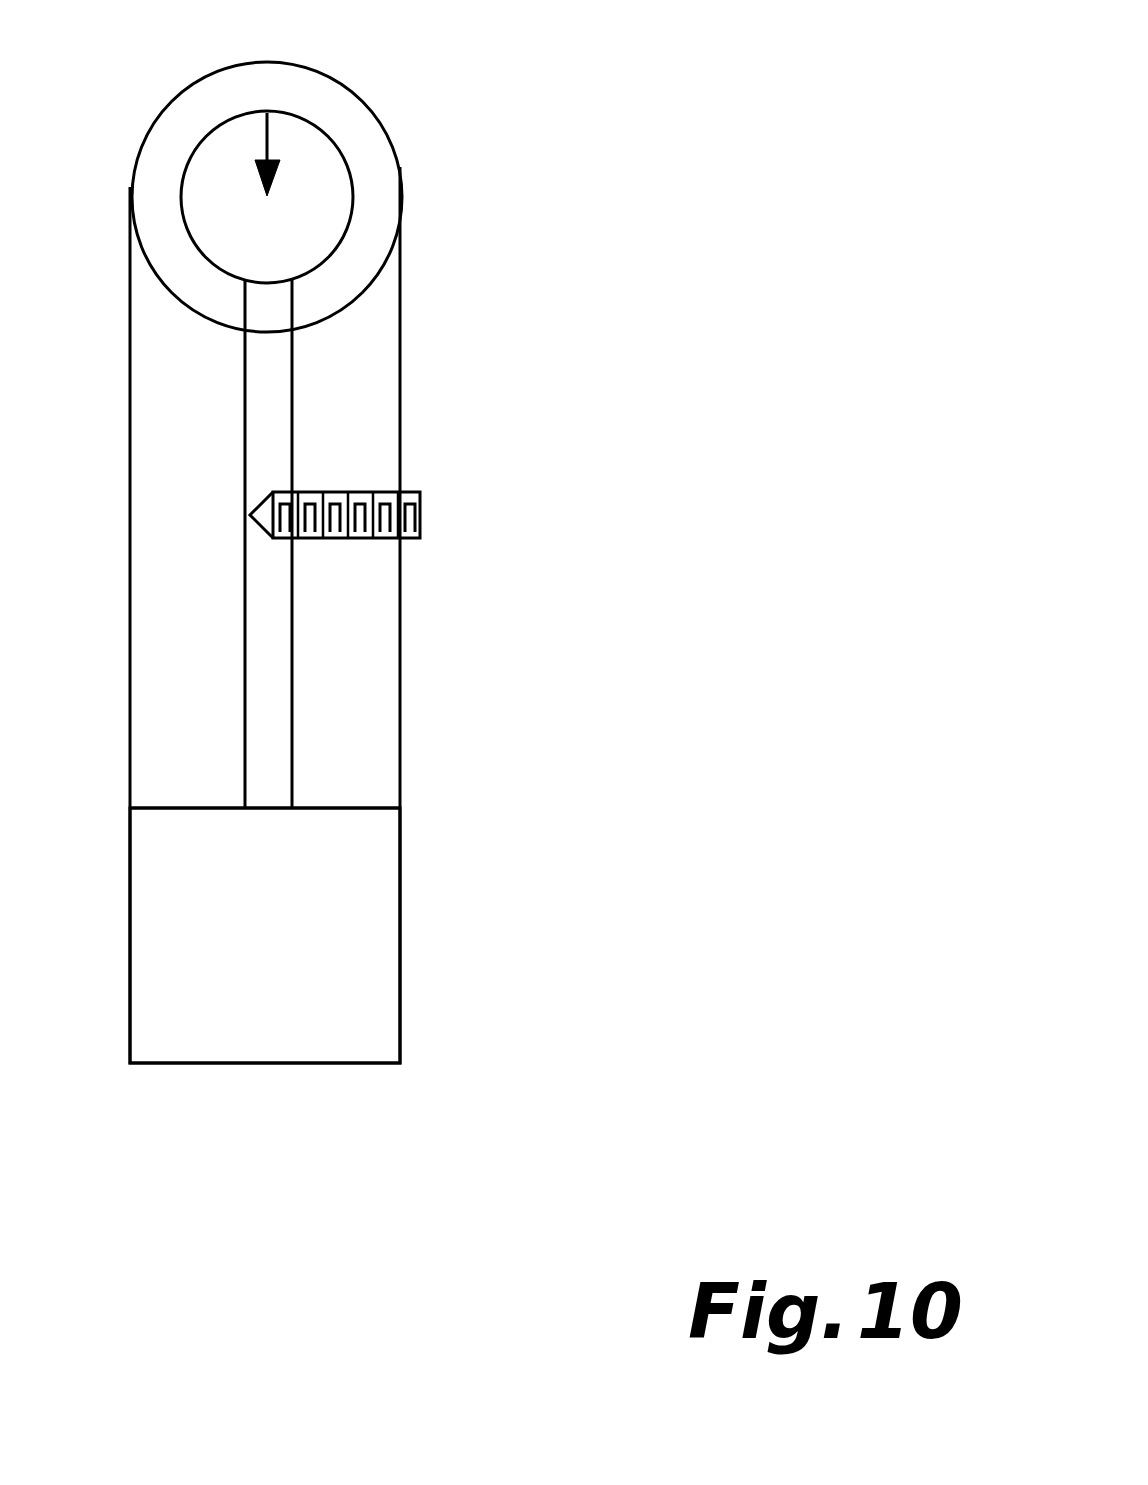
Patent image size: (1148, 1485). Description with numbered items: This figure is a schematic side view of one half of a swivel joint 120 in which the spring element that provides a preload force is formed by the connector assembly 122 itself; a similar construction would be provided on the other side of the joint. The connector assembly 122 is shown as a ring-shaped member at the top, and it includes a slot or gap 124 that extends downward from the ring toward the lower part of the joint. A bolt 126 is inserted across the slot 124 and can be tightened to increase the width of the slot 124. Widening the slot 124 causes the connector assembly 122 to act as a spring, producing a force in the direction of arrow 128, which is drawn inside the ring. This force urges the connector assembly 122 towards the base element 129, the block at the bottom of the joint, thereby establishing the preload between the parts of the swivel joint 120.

The swivel joint 120 is at (593, 268).
The connector assembly 122 is at (367, 98).
The slot 124 is at (268, 597).
The bolt 126 is at (420, 515).
The arrow 128 is at (267, 137).
The base element 129 is at (400, 928).